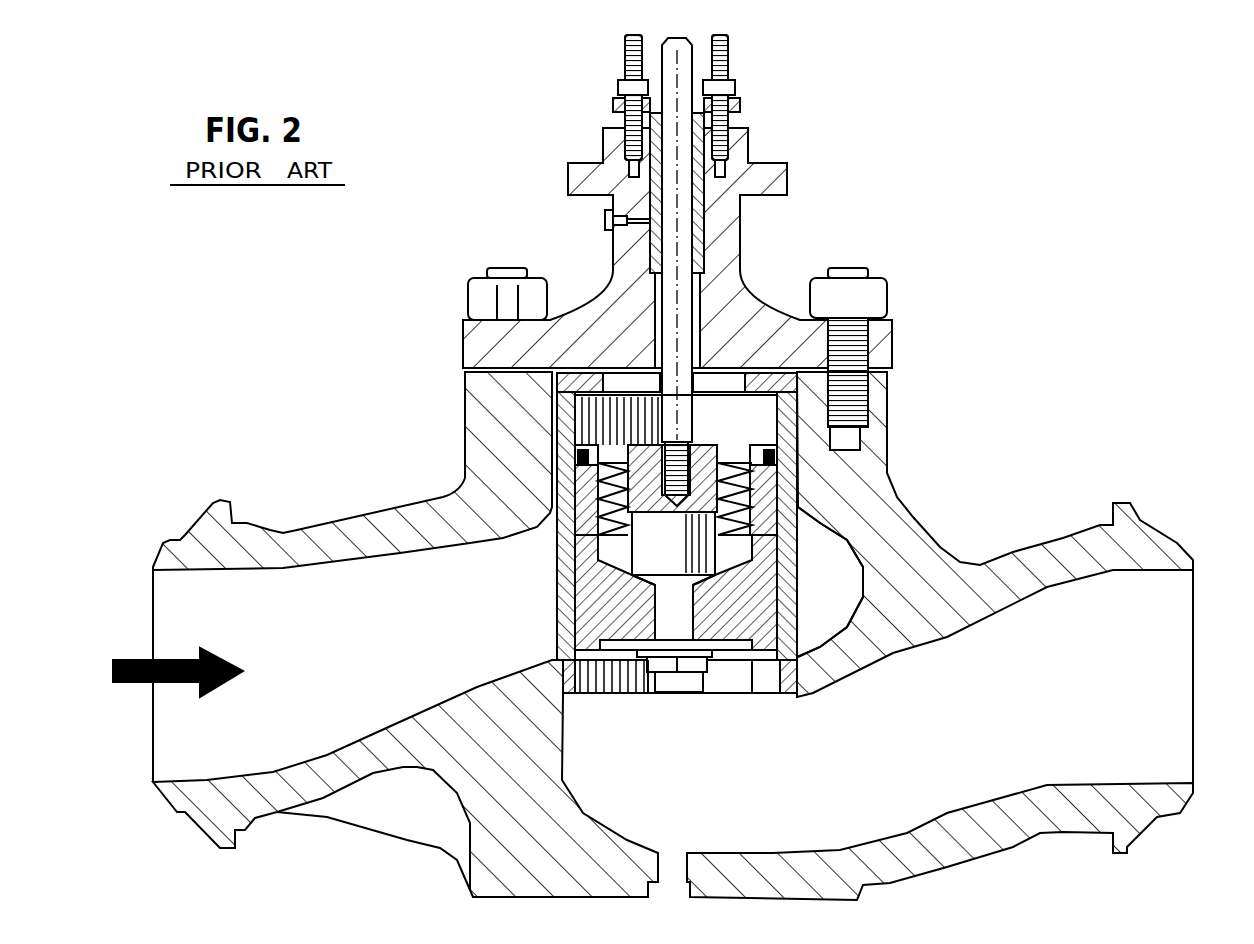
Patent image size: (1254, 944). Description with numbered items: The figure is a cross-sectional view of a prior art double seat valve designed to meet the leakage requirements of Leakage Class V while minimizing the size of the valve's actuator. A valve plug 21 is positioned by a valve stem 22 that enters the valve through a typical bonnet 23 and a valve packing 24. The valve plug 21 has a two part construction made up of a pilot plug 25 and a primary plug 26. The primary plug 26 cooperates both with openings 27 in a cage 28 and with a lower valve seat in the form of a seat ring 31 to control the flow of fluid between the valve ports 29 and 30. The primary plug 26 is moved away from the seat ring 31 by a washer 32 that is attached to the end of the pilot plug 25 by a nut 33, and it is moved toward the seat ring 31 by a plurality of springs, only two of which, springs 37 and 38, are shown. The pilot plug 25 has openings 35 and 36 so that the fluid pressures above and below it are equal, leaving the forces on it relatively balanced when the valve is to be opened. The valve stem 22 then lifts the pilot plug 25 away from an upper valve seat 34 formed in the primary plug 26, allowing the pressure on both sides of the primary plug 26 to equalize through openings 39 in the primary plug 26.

The valve plug 21 is at (703, 573).
The valve stem 22 is at (684, 63).
The bonnet 23 is at (738, 280).
The valve packing 24 is at (703, 213).
The pilot plug 25 is at (707, 447).
The primary plug 26 is at (800, 589).
The openings 27 is at (557, 610).
The cage 28 is at (567, 560).
The valve port 29 is at (273, 720).
The valve port 30 is at (1163, 676).
The seat ring 31 is at (805, 690).
The washer 32 is at (710, 603).
The nut 33 is at (698, 665).
The upper valve seat 34 is at (642, 597).
The opening 35 is at (612, 448).
The opening 36 is at (770, 447).
The spring 37 is at (573, 543).
The spring 38 is at (770, 535).
The openings 39 is at (702, 597).